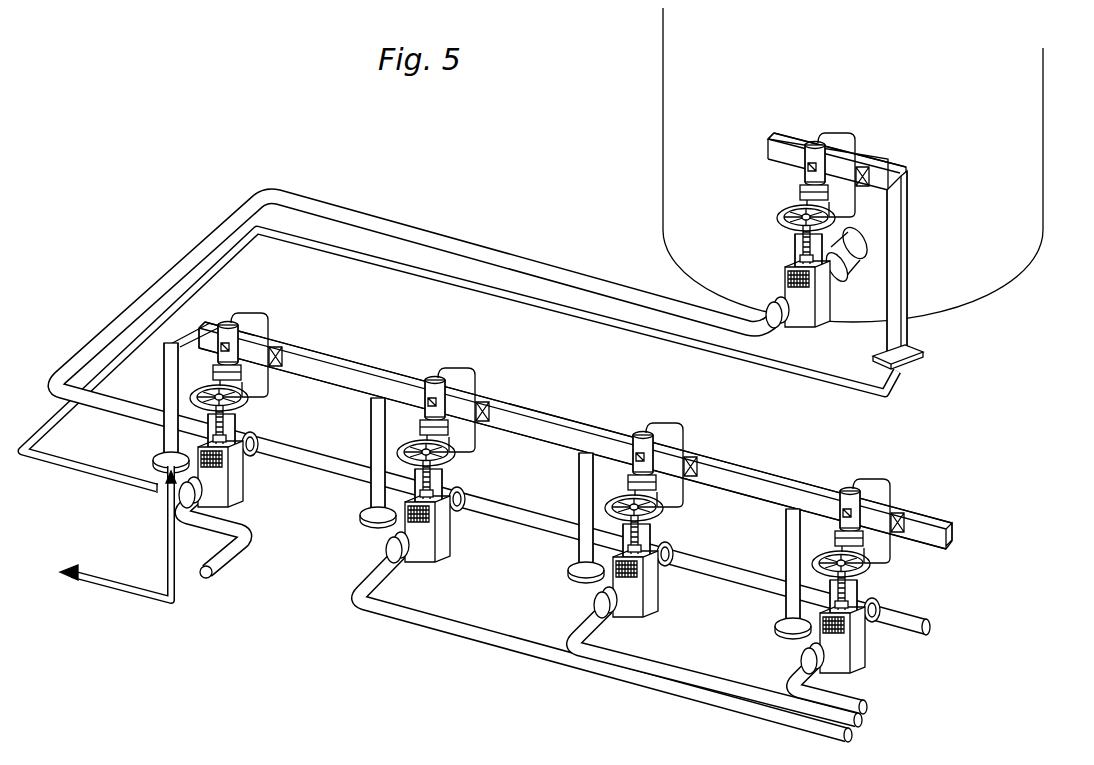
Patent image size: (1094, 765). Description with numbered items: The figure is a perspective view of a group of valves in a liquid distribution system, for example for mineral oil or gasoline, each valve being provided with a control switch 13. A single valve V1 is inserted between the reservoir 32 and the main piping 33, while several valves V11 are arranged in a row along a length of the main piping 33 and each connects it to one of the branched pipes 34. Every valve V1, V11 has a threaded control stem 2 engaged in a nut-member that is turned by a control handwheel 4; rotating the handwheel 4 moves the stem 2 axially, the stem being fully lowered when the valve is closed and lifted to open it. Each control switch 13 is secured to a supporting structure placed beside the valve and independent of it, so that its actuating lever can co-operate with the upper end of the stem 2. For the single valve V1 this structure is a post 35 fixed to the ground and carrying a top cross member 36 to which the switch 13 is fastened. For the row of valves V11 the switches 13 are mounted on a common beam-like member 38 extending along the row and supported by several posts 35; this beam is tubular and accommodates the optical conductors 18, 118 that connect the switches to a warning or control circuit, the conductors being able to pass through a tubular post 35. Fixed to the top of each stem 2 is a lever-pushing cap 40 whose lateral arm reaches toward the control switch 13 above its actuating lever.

The threaded control stem 2 is at (805, 246).
The control handwheel 4 is at (776, 211).
The control switch 13 is at (230, 322).
The optical conductor 18 is at (843, 131).
The reservoir 32 is at (1036, 137).
The main piping 33 is at (517, 257).
The branched pipe 34 is at (238, 548).
The post 35 is at (907, 264).
The top cross member 36 is at (888, 166).
The beam-like member 38 is at (540, 412).
The lever-pushing cap 40 is at (634, 456).
The optical conductor 118 is at (855, 212).
The valve V1 is at (821, 312).
The valve V11 is at (240, 491).